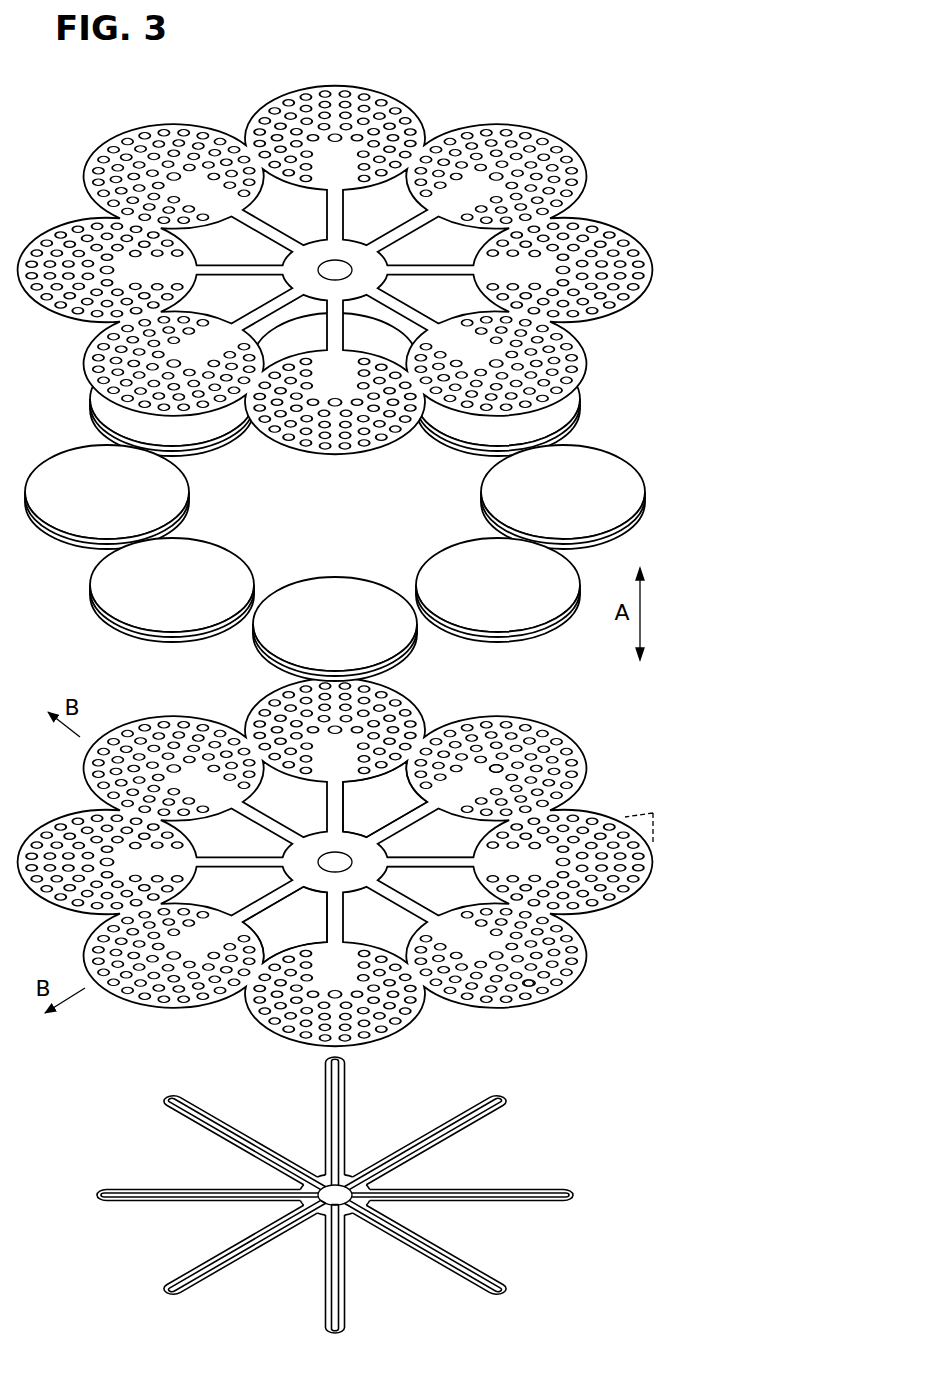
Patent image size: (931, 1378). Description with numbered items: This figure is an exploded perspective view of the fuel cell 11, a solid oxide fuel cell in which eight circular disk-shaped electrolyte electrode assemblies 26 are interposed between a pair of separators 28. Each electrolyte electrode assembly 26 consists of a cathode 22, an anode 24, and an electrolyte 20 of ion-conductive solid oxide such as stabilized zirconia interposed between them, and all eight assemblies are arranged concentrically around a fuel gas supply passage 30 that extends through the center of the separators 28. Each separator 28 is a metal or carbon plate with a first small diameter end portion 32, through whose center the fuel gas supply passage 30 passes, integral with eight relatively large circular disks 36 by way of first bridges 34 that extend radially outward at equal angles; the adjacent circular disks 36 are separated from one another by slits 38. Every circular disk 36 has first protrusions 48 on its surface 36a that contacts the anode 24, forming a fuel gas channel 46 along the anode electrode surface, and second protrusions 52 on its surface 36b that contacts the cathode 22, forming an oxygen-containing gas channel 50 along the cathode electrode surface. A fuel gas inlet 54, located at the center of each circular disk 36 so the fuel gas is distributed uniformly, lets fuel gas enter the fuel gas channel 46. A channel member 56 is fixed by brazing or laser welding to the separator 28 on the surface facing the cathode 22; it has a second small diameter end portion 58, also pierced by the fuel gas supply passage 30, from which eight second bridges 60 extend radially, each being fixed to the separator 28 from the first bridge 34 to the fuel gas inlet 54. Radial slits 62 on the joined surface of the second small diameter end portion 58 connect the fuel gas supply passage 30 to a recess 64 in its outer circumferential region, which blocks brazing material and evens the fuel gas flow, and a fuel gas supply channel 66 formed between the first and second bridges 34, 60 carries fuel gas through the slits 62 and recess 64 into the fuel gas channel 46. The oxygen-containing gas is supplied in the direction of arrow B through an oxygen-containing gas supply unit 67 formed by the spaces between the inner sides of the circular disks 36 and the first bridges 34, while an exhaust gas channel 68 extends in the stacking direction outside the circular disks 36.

The fuel cell 11 is at (540, 91).
The separator 28 is at (353, 568).
The electrolyte electrode assembly 26 is at (166, 575).
The cathode 22 is at (123, 582).
The electrolyte 20 is at (107, 613).
The anode 24 is at (128, 607).
The fuel gas supply passage 30 is at (328, 866).
The first small diameter end portion 32 is at (393, 853).
The first bridge 34 is at (348, 801).
The circular disk 36 is at (398, 688).
The surface contacting the anode 36a is at (585, 955).
The surface contacting the cathode 36b is at (483, 996).
The slit 38 is at (100, 822).
The fuel gas channel 46 is at (597, 868).
The first protrusion 48 is at (585, 817).
The oxygen-containing gas channel 50 is at (528, 985).
The second protrusion 52 is at (649, 814).
The fuel gas inlet 54 is at (497, 765).
The channel member 56 is at (335, 1191).
The second small diameter end portion 58 is at (352, 1163).
The second bridge 60 is at (483, 1192).
The slit 62 is at (380, 1185).
The recess 64 is at (318, 1218).
The fuel gas supply channel 66 is at (176, 1196).
The oxygen-containing gas supply unit 67 is at (277, 925).
The exhaust gas channel 68 is at (93, 998).